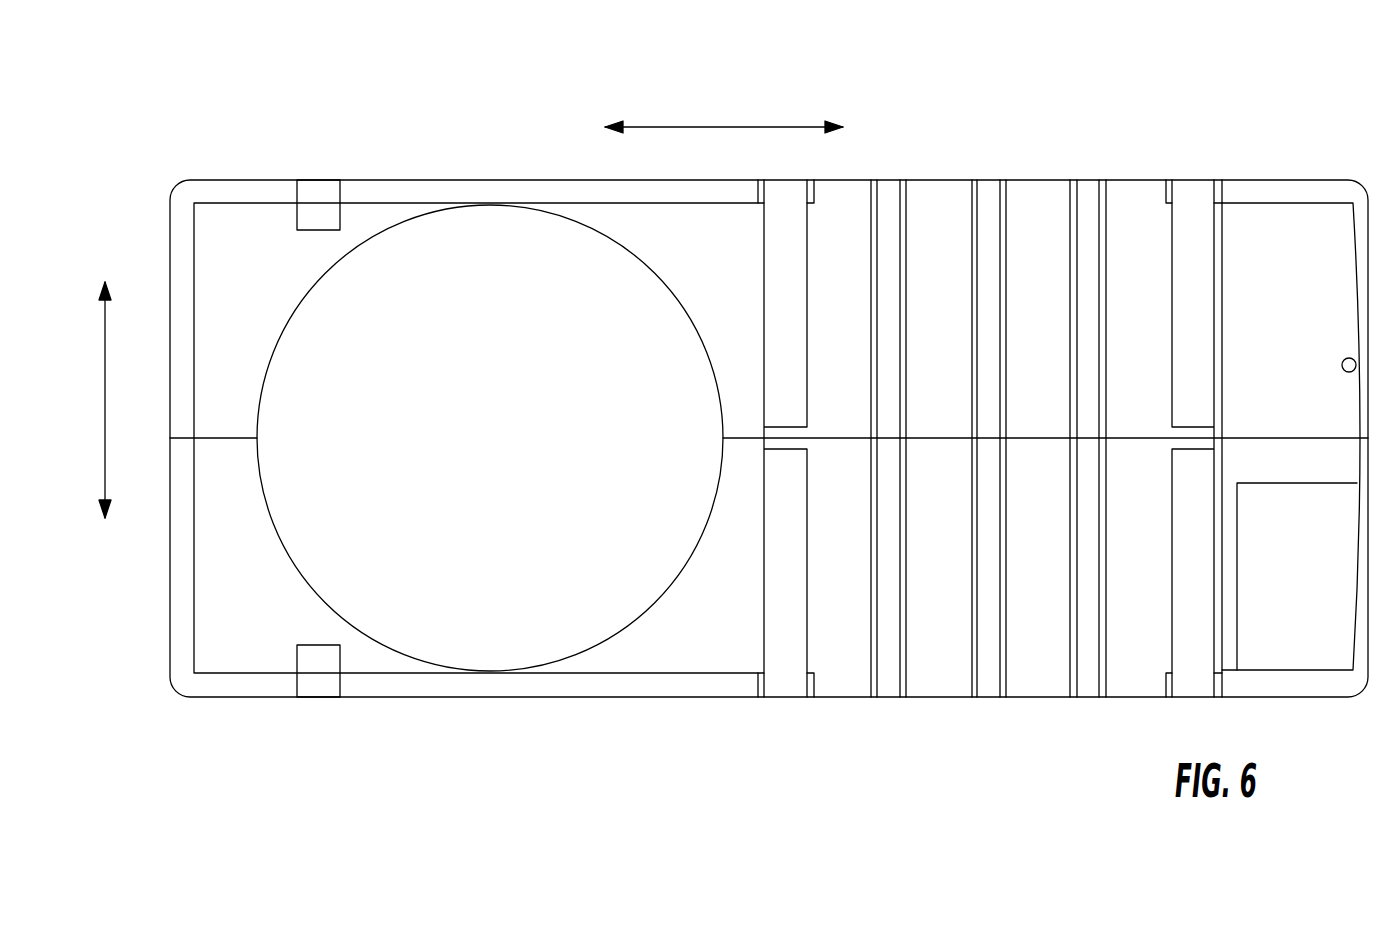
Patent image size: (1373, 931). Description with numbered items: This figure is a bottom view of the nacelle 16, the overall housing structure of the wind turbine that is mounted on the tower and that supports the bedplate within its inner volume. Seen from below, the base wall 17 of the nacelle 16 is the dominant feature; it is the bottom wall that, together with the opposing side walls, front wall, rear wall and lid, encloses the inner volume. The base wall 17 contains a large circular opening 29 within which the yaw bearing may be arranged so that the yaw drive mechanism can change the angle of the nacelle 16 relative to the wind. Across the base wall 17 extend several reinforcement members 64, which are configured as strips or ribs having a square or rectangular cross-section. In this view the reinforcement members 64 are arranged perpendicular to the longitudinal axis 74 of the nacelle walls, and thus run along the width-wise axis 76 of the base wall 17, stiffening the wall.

The nacelle 16 is at (112, 155).
The base wall 17 is at (789, 675).
The circular opening 29 is at (500, 462).
The reinforcement members 64 is at (1102, 692).
The longitudinal axis 74 is at (698, 125).
The width-wise axis 76 is at (103, 410).